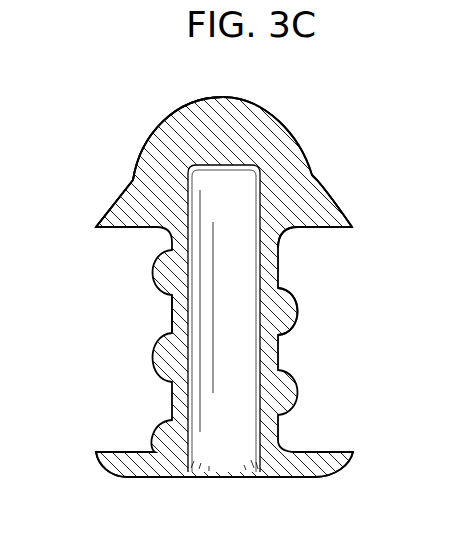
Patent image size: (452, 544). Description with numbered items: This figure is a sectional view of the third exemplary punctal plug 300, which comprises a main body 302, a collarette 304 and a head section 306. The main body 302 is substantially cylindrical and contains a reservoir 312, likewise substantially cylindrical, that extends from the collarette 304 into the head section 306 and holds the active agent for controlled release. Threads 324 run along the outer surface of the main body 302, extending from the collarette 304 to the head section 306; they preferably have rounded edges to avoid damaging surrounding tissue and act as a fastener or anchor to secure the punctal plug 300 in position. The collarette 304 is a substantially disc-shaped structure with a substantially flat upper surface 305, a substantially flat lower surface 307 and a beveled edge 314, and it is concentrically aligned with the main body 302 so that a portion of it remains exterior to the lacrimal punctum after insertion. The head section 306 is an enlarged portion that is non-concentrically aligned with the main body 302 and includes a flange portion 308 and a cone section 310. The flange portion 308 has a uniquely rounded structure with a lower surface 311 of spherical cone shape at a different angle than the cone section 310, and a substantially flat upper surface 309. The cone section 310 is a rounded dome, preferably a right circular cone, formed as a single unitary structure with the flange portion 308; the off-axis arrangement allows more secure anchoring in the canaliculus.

The punctal plug 300 is at (84, 174).
The main body 302 is at (172, 316).
The collarette 304 is at (118, 451).
The upper surface 305 is at (295, 478).
The head section 306 is at (350, 92).
The lower surface 307 is at (321, 451).
The flange portion 308 is at (99, 223).
The upper surface 309 is at (314, 227).
The cone section 310 is at (158, 139).
The lower surface 311 is at (327, 189).
The reservoir 312 is at (243, 188).
The beveled edge 314 is at (117, 479).
The threads 324 is at (298, 311).